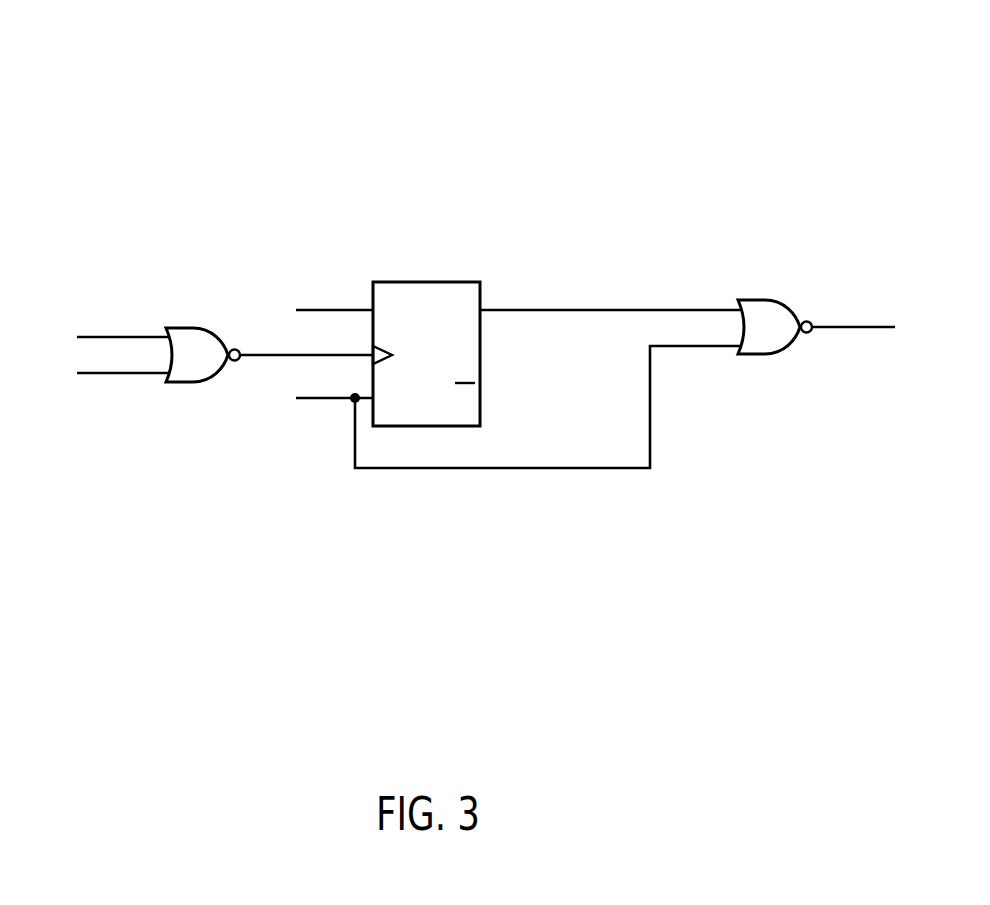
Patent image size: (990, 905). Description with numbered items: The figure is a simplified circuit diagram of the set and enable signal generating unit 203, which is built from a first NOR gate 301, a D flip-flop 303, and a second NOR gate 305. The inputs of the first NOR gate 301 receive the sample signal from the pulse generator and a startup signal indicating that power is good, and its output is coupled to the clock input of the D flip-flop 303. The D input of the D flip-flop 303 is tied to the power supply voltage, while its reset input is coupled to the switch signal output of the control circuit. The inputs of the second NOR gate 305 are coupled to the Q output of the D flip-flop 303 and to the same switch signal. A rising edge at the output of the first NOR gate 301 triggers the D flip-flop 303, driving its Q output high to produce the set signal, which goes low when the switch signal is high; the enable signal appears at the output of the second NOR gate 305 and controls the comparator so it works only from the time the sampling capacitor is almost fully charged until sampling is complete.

The set and enable signal generating unit 203 is at (878, 104).
The first NOR gate 301 is at (195, 318).
The D flip-flop 303 is at (432, 278).
The second NOR gate 305 is at (763, 297).